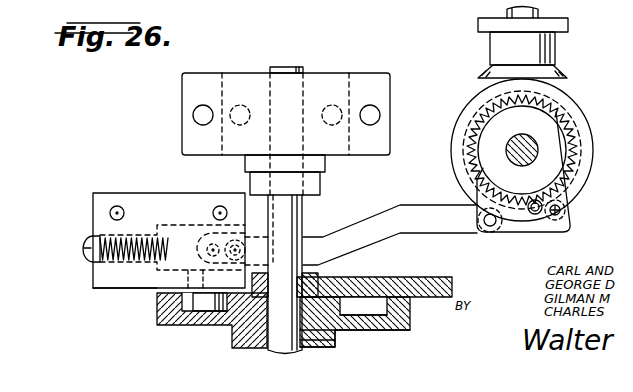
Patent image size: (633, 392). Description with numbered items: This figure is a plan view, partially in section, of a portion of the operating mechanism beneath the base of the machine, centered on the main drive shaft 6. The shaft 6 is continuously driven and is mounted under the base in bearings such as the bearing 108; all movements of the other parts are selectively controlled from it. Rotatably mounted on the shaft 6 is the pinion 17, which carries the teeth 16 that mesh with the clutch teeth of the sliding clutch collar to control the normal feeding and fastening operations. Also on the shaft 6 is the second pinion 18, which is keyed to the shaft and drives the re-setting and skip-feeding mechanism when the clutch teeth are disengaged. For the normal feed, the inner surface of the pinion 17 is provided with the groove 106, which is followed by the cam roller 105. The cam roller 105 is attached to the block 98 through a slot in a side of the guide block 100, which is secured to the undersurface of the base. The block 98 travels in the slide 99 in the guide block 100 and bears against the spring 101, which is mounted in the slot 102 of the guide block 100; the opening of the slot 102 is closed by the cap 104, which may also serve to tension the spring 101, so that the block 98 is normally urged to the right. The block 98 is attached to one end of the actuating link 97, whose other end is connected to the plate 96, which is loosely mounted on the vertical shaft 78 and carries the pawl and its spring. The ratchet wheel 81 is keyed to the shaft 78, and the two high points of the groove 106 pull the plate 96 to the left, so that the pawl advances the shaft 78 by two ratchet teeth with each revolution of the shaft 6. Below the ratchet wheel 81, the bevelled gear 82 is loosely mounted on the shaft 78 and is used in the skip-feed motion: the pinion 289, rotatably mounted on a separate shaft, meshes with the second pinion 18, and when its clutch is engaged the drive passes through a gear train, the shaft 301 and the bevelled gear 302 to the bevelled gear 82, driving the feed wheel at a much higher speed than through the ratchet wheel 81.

The bearing 108 is at (333, 85).
The main drive shaft 6 is at (300, 221).
The block 98 is at (187, 233).
The cap 104 is at (90, 240).
The spring 101 is at (150, 262).
The slot 102 is at (93, 266).
The slide 99 is at (160, 272).
The guide block 100 is at (95, 288).
The groove 106 is at (188, 325).
The cam roller 105 is at (207, 303).
The teeth 16 is at (315, 345).
The pinion 17 is at (358, 327).
The second pinion 18 is at (305, 275).
The pinion 289 is at (417, 268).
The actuating link 97 is at (436, 210).
The plate 96 is at (562, 194).
The bevelled gear 82 is at (588, 124).
The ratchet wheel 81 is at (557, 111).
The shaft 78 is at (537, 152).
The bevelled gear 302 is at (560, 75).
The shaft 301 is at (540, 14).